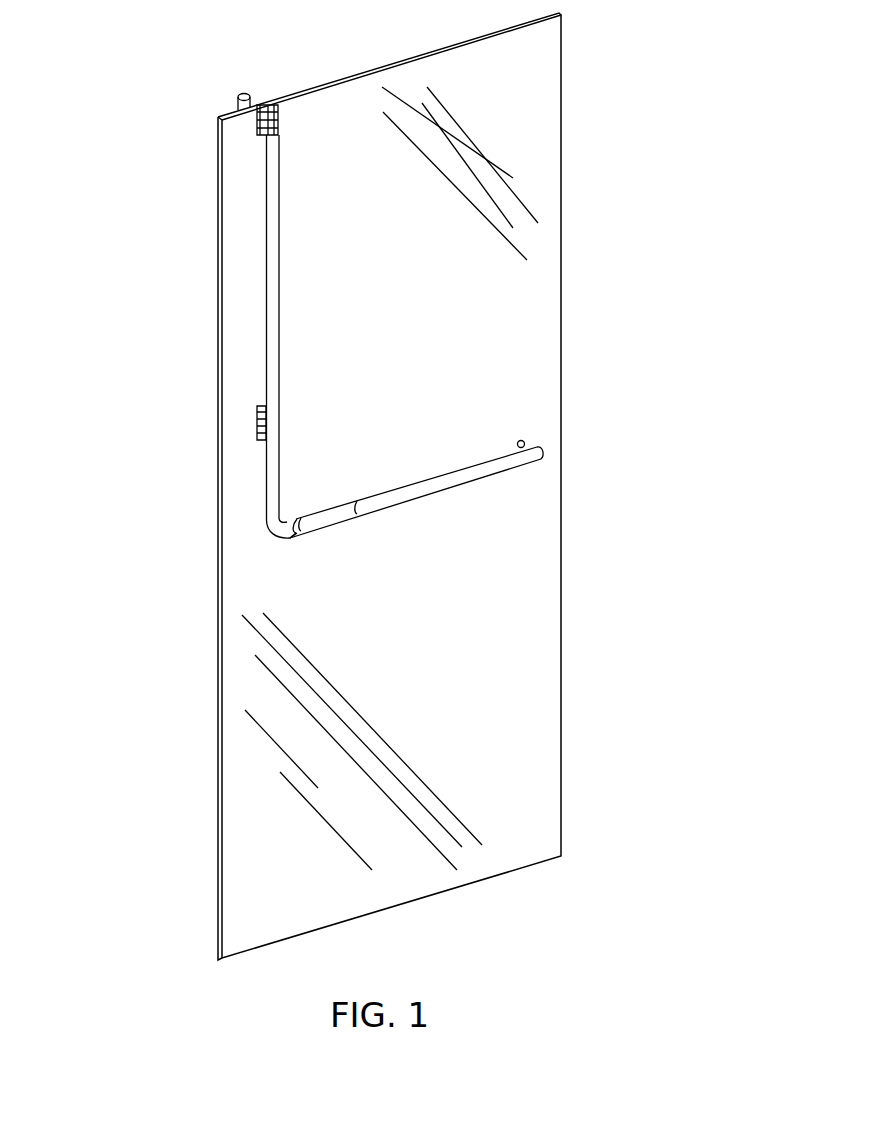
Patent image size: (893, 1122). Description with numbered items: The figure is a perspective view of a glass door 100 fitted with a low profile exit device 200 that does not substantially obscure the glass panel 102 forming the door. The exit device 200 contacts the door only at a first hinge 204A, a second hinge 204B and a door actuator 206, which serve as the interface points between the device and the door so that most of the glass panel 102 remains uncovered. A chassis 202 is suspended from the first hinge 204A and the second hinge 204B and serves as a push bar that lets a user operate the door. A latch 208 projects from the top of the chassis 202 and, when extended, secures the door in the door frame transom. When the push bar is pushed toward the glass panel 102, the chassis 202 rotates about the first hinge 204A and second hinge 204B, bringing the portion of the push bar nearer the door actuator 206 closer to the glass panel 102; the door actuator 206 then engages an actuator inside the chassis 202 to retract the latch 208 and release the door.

The glass door 100 is at (155, 80).
The glass panel 102 is at (515, 78).
The exit device 200 is at (256, 340).
The chassis 202 is at (268, 527).
The first hinge 204A is at (257, 123).
The second hinge 204B is at (527, 445).
The door actuator 206 is at (257, 425).
The latch 208 is at (276, 117).